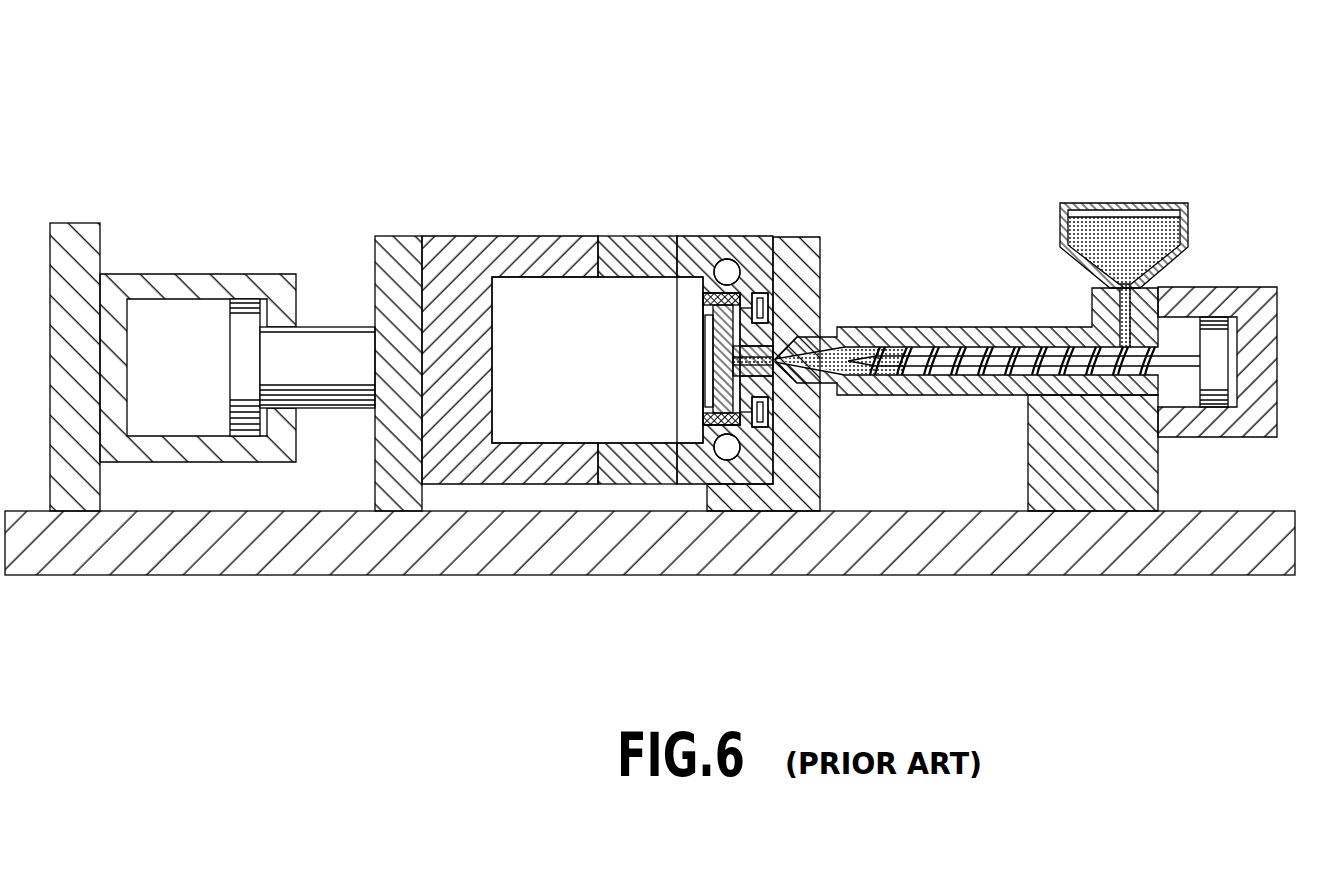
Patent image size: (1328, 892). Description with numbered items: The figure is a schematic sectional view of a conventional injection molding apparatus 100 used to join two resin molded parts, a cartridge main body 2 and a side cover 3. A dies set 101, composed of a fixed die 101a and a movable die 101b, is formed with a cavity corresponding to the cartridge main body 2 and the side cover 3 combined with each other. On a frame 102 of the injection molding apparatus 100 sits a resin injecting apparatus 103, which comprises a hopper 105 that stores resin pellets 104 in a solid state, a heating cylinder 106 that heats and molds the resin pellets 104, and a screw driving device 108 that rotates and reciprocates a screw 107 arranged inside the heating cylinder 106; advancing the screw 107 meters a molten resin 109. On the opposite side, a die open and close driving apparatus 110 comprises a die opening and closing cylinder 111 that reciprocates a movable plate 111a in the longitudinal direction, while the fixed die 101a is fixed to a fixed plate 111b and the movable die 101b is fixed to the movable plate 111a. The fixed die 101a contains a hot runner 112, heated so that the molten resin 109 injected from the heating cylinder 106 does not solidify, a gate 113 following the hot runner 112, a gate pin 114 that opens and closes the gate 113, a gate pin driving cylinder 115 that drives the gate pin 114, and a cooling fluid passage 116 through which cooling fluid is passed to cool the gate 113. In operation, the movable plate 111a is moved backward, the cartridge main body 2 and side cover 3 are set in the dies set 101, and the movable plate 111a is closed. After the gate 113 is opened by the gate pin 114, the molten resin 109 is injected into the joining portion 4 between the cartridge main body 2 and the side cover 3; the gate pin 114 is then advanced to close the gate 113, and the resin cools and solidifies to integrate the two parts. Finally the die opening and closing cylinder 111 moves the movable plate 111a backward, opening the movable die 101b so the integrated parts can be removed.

The injection molding apparatus 100 is at (810, 108).
The dies set 101 is at (606, 166).
The fixed die 101a is at (765, 236).
The movable die 101b is at (483, 248).
The frame 102 is at (985, 560).
The resin injecting apparatus 103 is at (973, 221).
The resin pellets 104 is at (1110, 232).
The hopper 105 is at (1186, 212).
The heating cylinder 106 is at (1046, 338).
The screw 107 is at (952, 355).
The screw driving device 108 is at (1252, 295).
The molten resin 109 is at (866, 335).
The die open and close driving apparatus 110 is at (242, 222).
The die opening and closing cylinder 111 is at (182, 272).
The movable plate 111a is at (396, 240).
The fixed plate 111b is at (794, 500).
The hot runner 112 is at (798, 420).
The gate 113 is at (713, 328).
The gate pin 114 is at (708, 440).
The gate pin driving cylinder 115 is at (790, 440).
The cooling fluid passage 116 is at (725, 238).
The cartridge main body 2 is at (562, 255).
The side cover 3 is at (677, 236).
The joining portion 4 is at (664, 372).